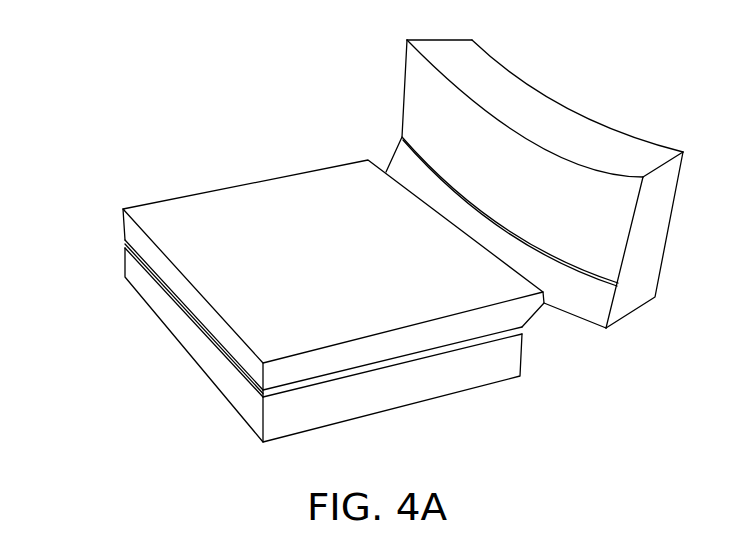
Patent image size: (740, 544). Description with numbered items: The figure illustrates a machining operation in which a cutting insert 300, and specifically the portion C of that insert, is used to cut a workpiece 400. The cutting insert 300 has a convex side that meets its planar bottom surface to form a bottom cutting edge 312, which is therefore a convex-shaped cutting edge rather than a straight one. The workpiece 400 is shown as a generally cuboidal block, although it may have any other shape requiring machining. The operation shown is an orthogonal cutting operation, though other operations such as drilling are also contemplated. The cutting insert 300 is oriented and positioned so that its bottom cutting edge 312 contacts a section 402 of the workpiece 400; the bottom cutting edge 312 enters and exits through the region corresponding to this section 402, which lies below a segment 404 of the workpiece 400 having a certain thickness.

The cutting insert 300 is at (561, 95).
The bottom cutting edge 312 is at (578, 322).
The workpiece 400 is at (228, 180).
The section 402 is at (130, 253).
The segment 404 is at (243, 357).
The portion C is at (378, 53).